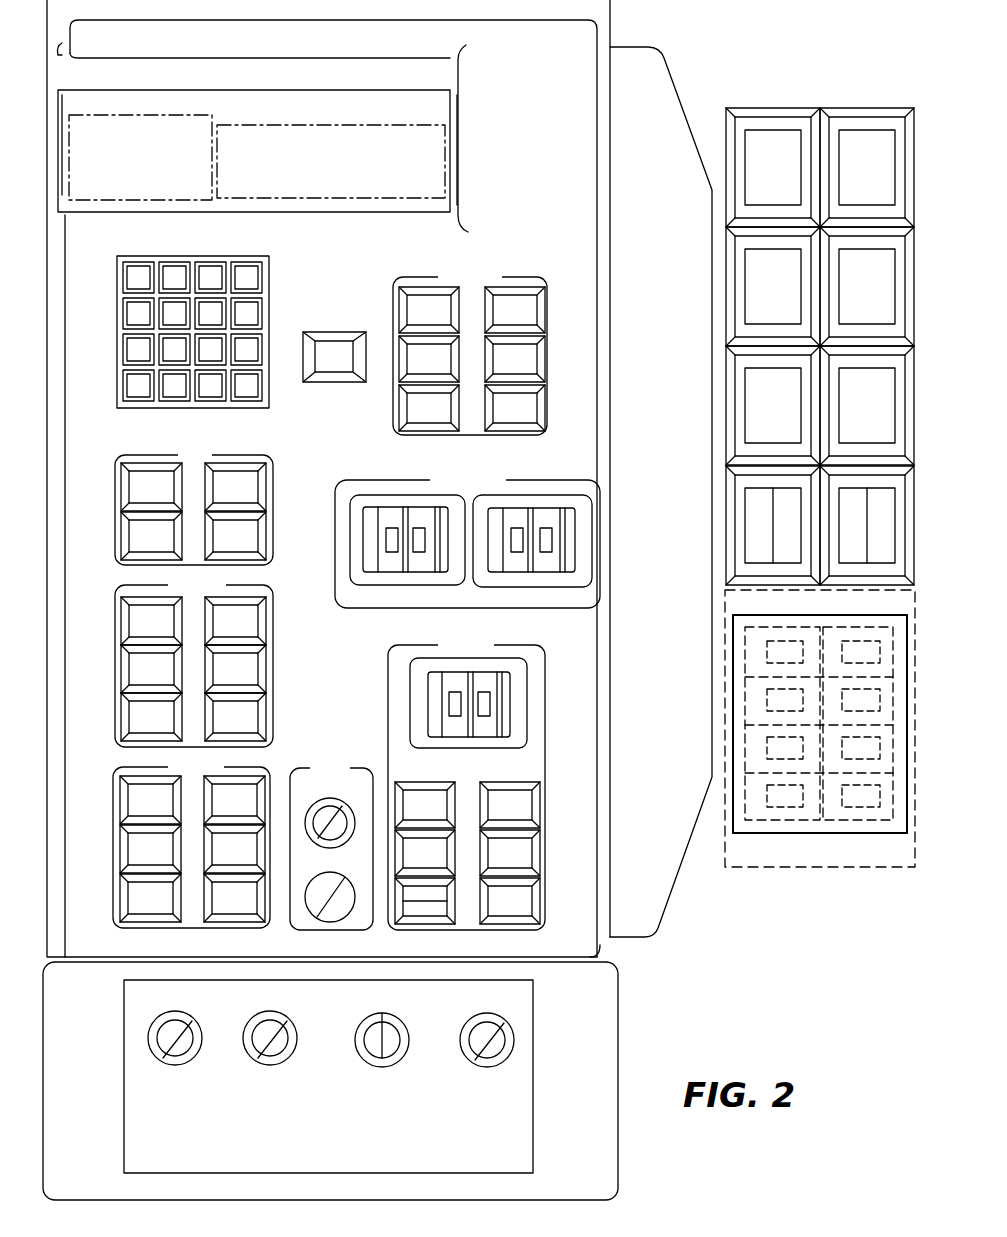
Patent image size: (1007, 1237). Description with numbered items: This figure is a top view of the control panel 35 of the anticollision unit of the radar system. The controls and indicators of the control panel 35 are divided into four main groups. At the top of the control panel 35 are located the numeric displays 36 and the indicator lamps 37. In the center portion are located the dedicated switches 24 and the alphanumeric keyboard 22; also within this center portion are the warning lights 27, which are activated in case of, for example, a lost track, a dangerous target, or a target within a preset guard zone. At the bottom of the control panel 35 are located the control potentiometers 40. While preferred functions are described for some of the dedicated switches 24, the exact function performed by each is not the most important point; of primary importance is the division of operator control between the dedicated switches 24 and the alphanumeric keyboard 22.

The alphanumeric keyboard 22 is at (279, 276).
The dedicated switches 24 is at (318, 382).
The warning lights 27 is at (485, 264).
The control panel 35 is at (450, 600).
The numeric displays 36 is at (791, 830).
The indicator lamps 37 is at (820, 313).
The control potentiometers 40 is at (197, 1062).